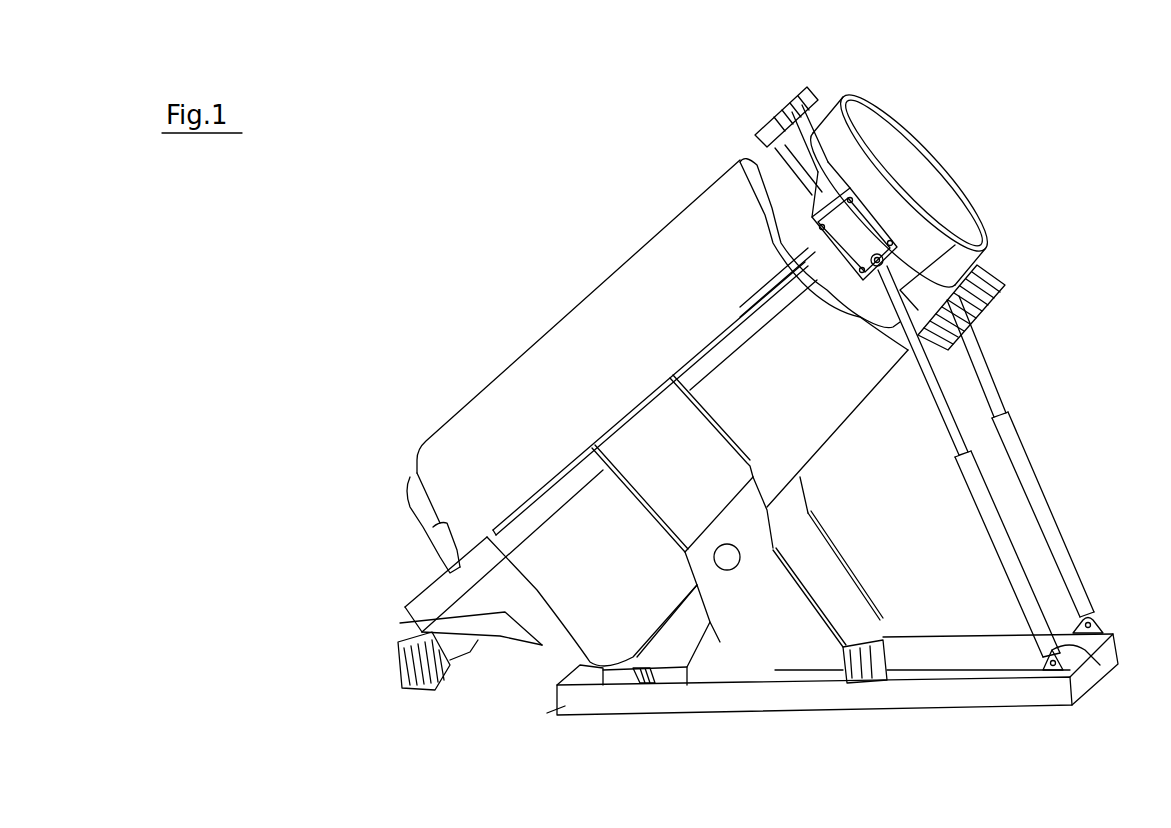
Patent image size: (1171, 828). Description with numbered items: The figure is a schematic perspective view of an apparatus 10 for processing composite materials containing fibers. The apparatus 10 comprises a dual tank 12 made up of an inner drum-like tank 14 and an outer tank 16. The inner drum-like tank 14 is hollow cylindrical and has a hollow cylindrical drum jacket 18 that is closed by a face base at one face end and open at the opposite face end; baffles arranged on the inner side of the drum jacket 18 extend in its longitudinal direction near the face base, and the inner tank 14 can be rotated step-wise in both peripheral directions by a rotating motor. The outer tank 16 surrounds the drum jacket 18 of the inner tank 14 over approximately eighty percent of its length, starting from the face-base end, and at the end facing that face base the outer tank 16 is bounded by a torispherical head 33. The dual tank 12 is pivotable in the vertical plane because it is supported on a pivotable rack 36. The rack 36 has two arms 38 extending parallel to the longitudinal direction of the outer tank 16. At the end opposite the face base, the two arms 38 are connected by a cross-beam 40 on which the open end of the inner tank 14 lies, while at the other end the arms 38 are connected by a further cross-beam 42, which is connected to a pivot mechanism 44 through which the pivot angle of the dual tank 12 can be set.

The apparatus 10 is at (365, 212).
The dual tank 12 is at (733, 137).
The inner drum-like tank 14 is at (930, 240).
The outer tank 16 is at (737, 160).
The drum jacket 18 is at (583, 299).
The torispherical head 33 is at (551, 652).
The pivotable rack 36 is at (775, 665).
The arms 38 is at (533, 515).
The cross-beam 40 is at (985, 298).
The cross-beam 42 is at (453, 623).
The pivot mechanism 44 is at (1053, 460).